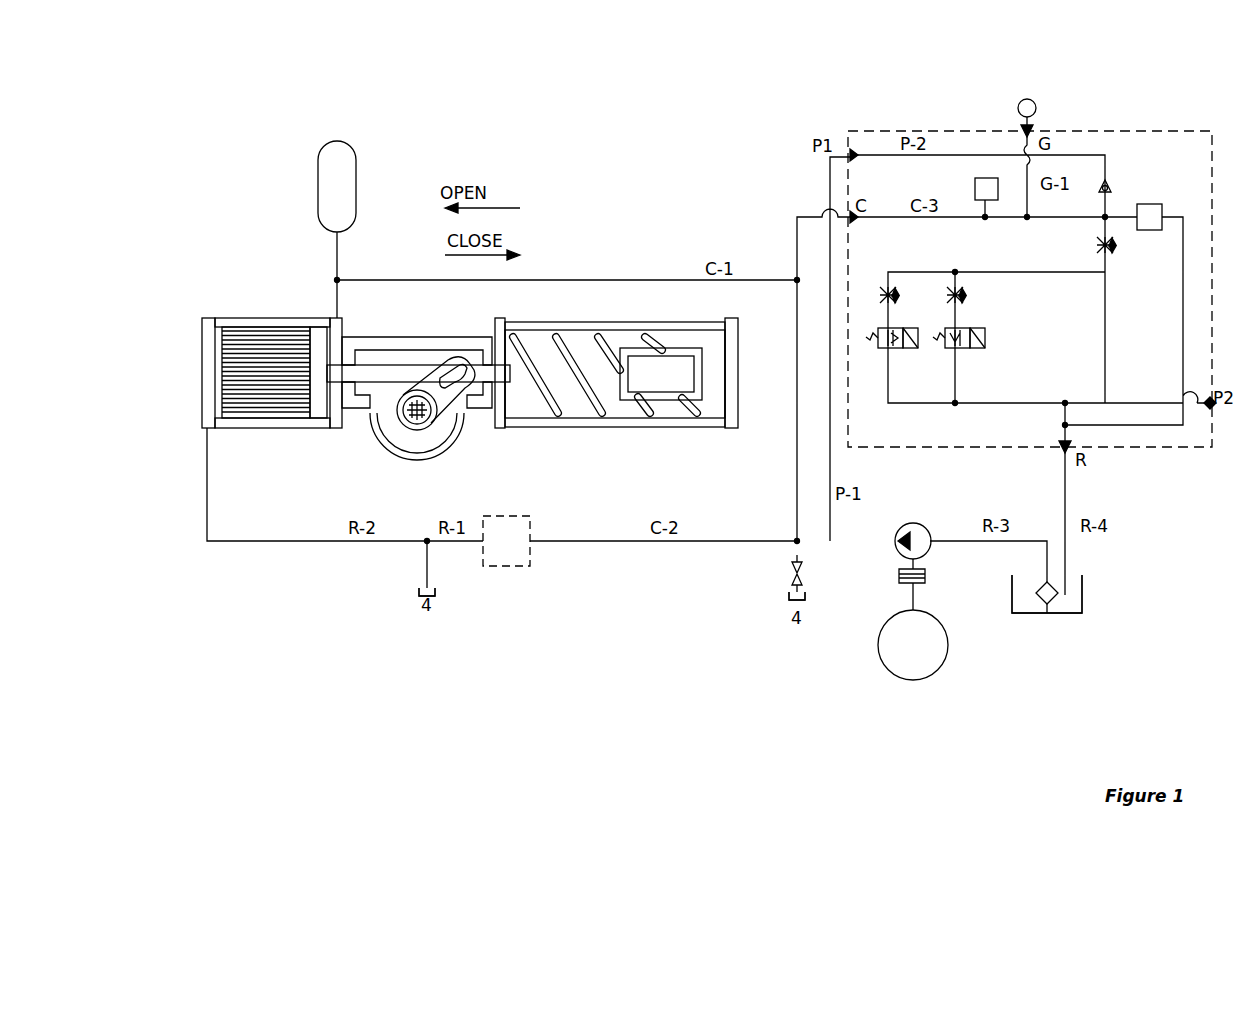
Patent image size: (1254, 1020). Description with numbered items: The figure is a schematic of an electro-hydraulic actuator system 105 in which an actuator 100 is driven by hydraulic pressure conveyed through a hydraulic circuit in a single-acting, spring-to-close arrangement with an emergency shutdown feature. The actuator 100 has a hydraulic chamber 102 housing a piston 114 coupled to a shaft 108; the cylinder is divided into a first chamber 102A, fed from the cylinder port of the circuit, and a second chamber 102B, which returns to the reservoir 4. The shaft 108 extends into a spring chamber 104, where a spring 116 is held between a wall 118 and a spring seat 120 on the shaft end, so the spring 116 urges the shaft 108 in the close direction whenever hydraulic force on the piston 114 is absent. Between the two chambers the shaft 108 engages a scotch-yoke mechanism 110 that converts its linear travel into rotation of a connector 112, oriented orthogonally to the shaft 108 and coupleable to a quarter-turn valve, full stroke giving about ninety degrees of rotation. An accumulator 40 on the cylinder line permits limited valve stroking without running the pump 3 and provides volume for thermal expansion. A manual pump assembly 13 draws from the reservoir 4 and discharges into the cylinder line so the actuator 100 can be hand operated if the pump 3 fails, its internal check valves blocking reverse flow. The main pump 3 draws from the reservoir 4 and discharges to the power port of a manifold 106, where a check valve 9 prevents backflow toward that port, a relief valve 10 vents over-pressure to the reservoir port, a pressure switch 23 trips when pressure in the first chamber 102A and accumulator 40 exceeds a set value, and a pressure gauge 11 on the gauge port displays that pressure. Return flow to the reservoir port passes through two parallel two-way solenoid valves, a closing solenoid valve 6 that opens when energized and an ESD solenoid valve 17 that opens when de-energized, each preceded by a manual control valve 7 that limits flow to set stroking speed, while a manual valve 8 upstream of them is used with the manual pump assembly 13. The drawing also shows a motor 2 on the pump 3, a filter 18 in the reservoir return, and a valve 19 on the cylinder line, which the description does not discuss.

The electric motor 2 is at (940, 620).
The hydraulic pump 3 is at (913, 523).
The hydraulic fluid reservoir 4 is at (1088, 596).
The closing solenoid valve 6 is at (975, 348).
The manual control valves 7 is at (884, 293).
The manual valve 8 is at (1128, 252).
The check valve 9 is at (1112, 182).
The relief valve 10 is at (1163, 212).
The pressure gauge 11 is at (1030, 99).
The manual pump assembly 13 is at (505, 568).
The ESD solenoid valve 17 is at (895, 348).
The filter 18 is at (1047, 610).
The relief valve 19 is at (800, 577).
The pressure switch 23 is at (972, 195).
The accumulator 40 is at (347, 146).
The actuator 100 is at (335, 460).
The hydraulic chamber 102 is at (299, 342).
The first chamber 102A is at (338, 340).
The second chamber 102B is at (244, 412).
The spring chamber 104 is at (616, 377).
The electro-hydraulic actuator system 105 is at (676, 105).
The manifold 106 is at (1118, 104).
The shaft 108 is at (578, 385).
The scotch-yoke mechanism 110 is at (447, 420).
The connector 112 is at (417, 424).
The piston 114 is at (322, 318).
The spring 116 is at (562, 340).
The wall 118 is at (505, 425).
The spring seat 120 is at (670, 402).